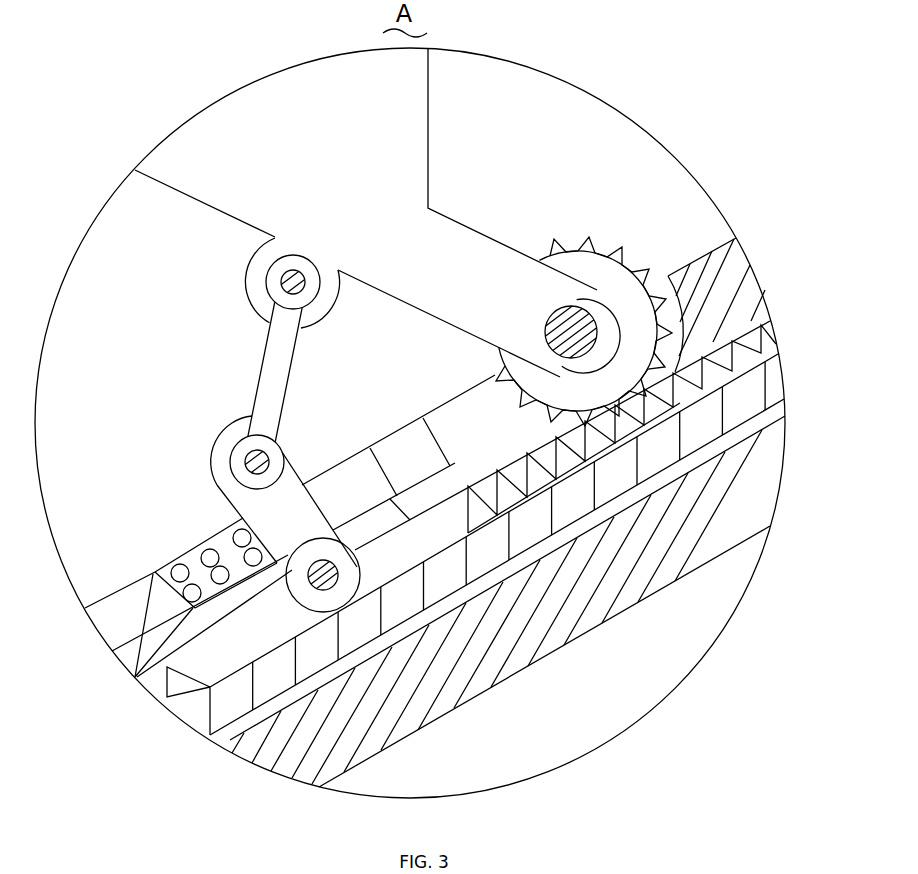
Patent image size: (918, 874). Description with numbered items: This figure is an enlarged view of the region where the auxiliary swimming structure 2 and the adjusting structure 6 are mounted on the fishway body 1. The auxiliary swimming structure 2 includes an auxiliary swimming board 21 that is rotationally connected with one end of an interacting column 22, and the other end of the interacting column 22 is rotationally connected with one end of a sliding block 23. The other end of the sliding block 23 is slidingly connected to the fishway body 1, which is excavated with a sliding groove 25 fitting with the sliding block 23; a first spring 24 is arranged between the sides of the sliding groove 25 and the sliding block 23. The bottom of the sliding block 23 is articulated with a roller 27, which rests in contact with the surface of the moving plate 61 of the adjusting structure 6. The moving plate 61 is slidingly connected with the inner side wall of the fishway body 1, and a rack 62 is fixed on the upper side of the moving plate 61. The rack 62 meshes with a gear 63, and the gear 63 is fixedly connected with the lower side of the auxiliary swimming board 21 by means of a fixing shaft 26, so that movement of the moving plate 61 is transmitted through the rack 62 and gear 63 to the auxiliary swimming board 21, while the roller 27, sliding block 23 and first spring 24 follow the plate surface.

The fishway body 1 is at (455, 650).
The auxiliary swimming structure 2 is at (257, 193).
The auxiliary swimming board 21 is at (403, 177).
The interacting column 22 is at (270, 375).
The sliding block 23 is at (253, 500).
The first spring 24 is at (152, 569).
The sliding groove 25 is at (347, 478).
The fixing shaft 26 is at (572, 330).
The roller 27 is at (360, 567).
The adjusting structure 6 is at (230, 697).
The moving plate 61 is at (740, 395).
The rack 62 is at (745, 357).
The gear 63 is at (523, 370).